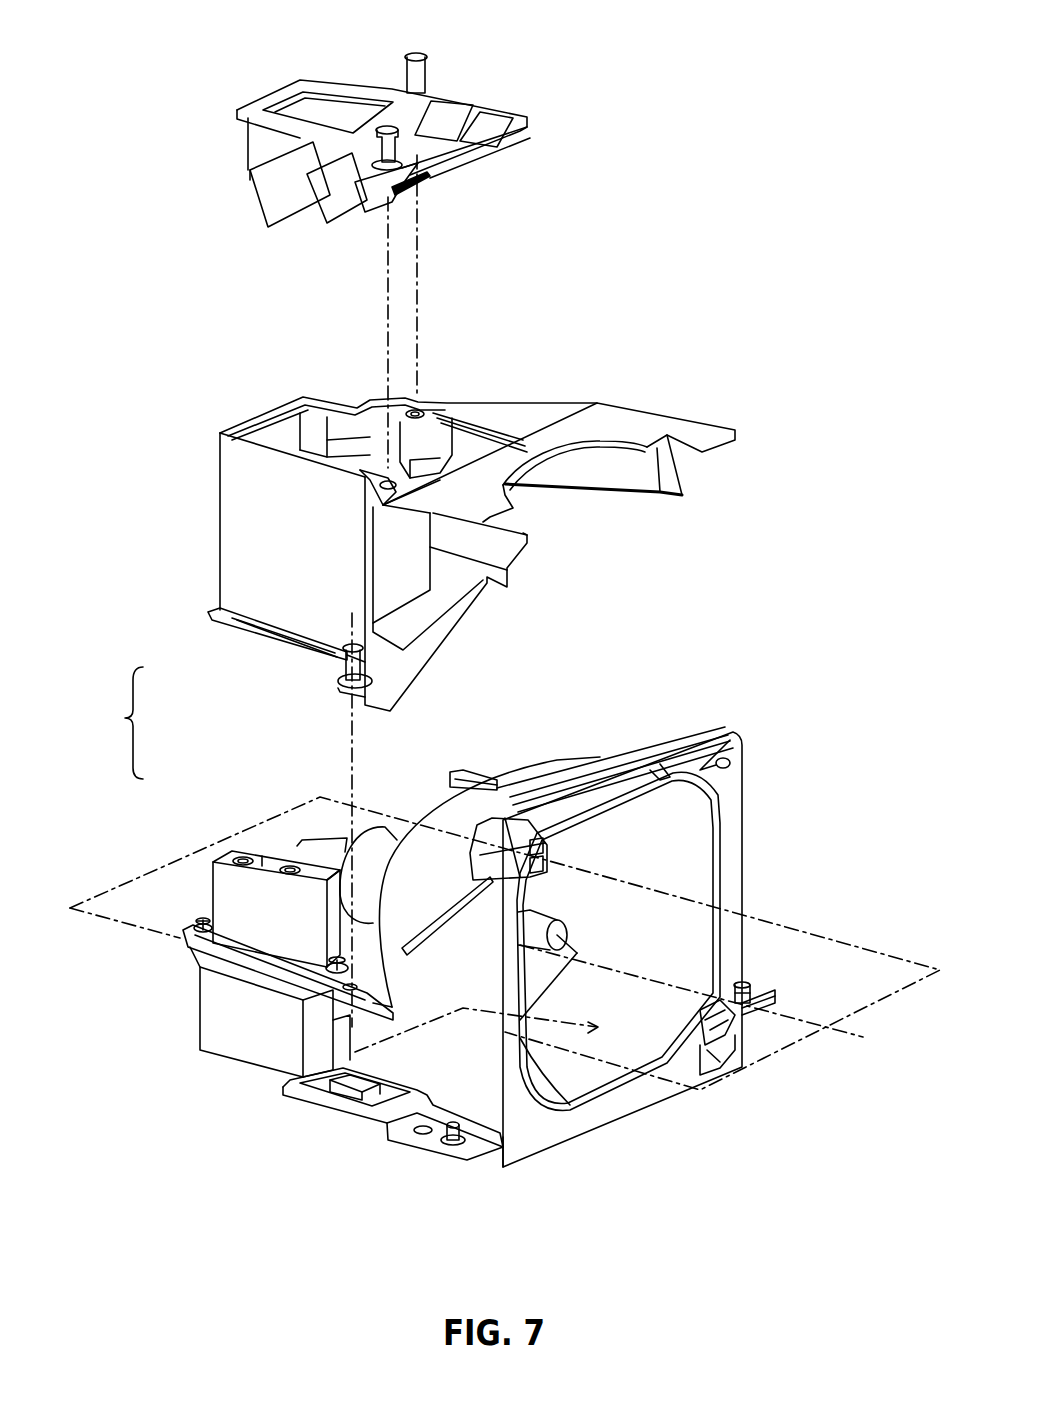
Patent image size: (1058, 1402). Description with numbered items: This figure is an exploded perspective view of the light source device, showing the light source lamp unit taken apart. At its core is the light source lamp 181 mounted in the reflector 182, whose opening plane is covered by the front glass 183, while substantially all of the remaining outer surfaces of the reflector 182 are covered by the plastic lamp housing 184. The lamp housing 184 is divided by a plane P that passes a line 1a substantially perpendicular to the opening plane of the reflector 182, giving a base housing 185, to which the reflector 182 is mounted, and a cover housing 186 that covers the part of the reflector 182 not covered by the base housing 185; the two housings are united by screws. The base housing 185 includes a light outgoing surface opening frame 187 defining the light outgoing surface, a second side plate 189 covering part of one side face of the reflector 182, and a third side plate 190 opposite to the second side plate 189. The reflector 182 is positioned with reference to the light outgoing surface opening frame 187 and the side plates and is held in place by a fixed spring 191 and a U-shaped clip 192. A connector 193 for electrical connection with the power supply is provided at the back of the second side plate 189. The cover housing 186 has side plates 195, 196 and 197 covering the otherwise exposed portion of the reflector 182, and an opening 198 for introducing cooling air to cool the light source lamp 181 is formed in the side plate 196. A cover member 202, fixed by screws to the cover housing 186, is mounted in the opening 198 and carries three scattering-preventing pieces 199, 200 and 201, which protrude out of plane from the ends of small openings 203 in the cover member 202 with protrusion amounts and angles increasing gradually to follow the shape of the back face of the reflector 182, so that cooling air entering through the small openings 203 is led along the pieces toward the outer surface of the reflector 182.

The line 1a is at (843, 1037).
The plane P is at (272, 815).
The light source lamp 181 is at (547, 913).
The reflector 182 is at (430, 813).
The front glass 183 is at (608, 1048).
The lamp housing 184 is at (115, 723).
The base housing 185 is at (177, 960).
The cover housing 186 is at (227, 553).
The light outgoing surface opening frame 187 is at (733, 797).
The second side plate 189 is at (490, 1095).
The third side plate 190 is at (480, 773).
The fixed spring 191 is at (680, 740).
The U-shaped clip 192 is at (507, 833).
The connector 193 is at (217, 893).
The side plate 195 is at (225, 500).
The side plate 196 is at (517, 420).
The side plate 197 is at (623, 478).
The opening 198 is at (347, 445).
The scattering-preventing piece 199 is at (380, 197).
The scattering-preventing piece 200 is at (327, 205).
The scattering-preventing piece 201 is at (272, 197).
The cover member 202 is at (253, 104).
The small opening 203 is at (338, 122).